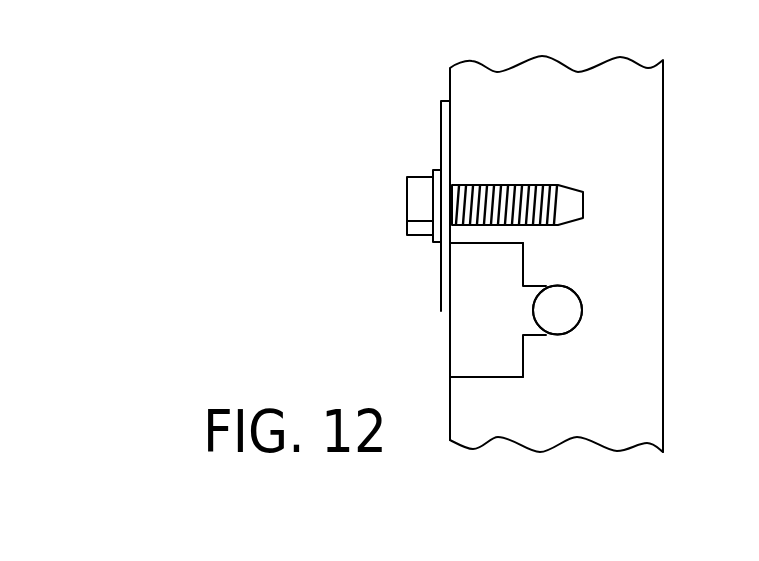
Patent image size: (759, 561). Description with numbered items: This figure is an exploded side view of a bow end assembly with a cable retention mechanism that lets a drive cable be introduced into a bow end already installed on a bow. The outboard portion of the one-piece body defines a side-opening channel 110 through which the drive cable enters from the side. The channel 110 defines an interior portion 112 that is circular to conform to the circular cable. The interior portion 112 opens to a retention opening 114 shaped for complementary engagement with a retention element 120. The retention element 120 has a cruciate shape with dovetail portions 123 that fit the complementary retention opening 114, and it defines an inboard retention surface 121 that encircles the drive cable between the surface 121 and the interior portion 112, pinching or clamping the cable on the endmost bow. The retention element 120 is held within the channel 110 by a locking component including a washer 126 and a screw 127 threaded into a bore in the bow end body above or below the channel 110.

The side-opening channel 110 is at (533, 337).
The interior portion 112 is at (573, 303).
The retention opening 114 is at (463, 377).
The retention element 120 is at (460, 318).
The inboard retention surface 121 is at (533, 304).
The dovetail portions 123 is at (460, 253).
The washer 126 is at (445, 138).
The screw 127 is at (413, 179).